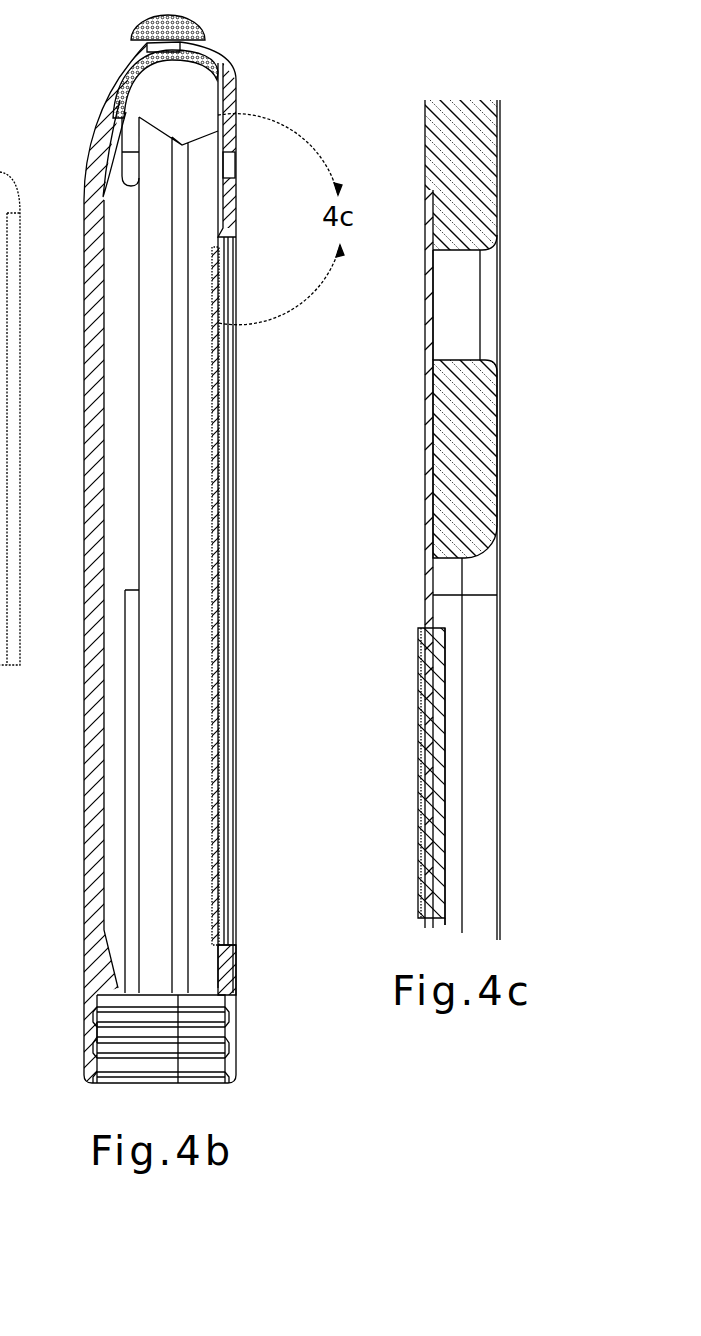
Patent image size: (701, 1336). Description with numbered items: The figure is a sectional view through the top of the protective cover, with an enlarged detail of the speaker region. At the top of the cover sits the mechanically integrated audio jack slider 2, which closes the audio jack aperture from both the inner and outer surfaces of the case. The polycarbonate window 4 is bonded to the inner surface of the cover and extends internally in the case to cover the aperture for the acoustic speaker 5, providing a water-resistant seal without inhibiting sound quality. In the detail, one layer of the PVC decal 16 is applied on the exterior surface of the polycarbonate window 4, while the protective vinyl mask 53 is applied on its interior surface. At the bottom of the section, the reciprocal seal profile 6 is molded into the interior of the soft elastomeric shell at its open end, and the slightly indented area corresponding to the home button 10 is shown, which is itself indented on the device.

In FIG. 4B, the audio jack slider 2 is at (160, 50).
In FIG. 4B, the polycarbonate window 4 is at (221, 965).
In FIG. 4C, the polycarbonate window 4 is at (425, 403).
In FIG. 4B, the acoustic speaker aperture 5 is at (236, 166).
In FIG. 4C, the acoustic speaker aperture 5 is at (499, 308).
In FIG. 4B, the reciprocal seal profile 6 is at (96, 1032).
In FIG. 4B, the home button area 10 is at (242, 1023).
In FIG. 4C, the PVC decal 16 is at (446, 805).
In FIG. 4B, the protective vinyl mask 53 is at (213, 598).
In FIG. 4C, the protective vinyl mask 53 is at (418, 700).